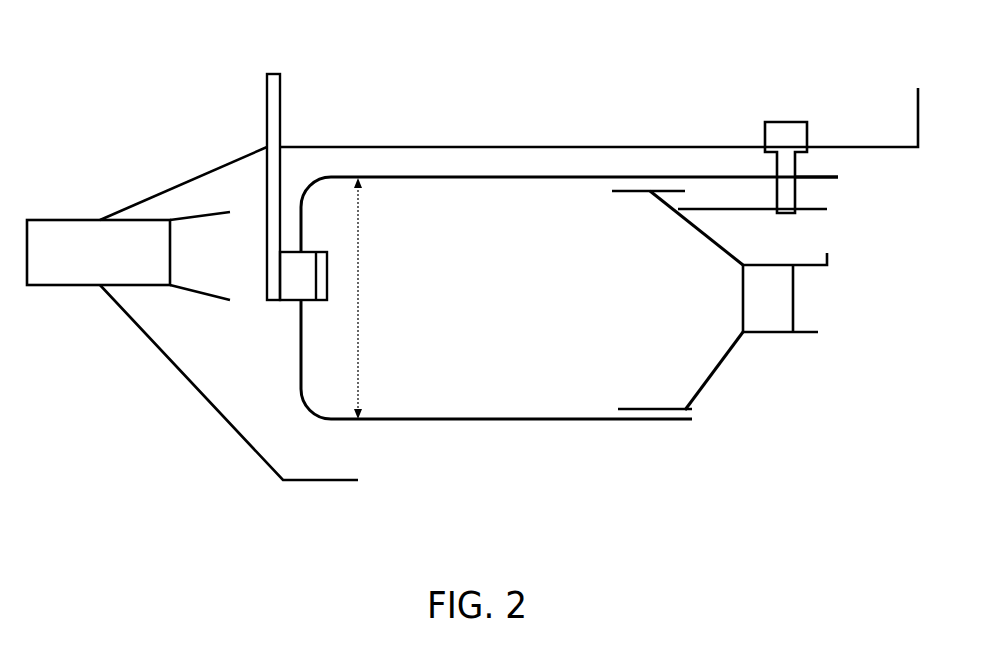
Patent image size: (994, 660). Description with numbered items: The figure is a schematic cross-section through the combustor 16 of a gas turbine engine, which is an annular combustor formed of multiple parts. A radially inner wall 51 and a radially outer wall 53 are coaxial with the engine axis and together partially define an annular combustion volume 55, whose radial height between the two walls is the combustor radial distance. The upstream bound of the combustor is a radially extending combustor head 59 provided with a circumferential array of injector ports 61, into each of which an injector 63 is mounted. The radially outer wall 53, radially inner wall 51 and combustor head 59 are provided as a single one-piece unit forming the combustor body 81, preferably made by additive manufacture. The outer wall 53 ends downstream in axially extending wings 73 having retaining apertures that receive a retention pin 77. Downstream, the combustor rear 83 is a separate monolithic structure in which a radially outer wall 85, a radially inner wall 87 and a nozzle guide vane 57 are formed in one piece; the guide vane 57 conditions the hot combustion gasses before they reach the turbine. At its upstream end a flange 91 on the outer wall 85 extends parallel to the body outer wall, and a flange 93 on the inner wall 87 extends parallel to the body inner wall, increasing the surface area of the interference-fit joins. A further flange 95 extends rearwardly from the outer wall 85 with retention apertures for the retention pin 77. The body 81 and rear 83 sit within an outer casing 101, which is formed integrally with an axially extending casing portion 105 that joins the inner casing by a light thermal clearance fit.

The combustor 16 is at (467, 108).
The radially inner wall 51 is at (527, 420).
The radially outer wall 53 is at (548, 177).
The annular combustion volume 55 is at (557, 316).
The nozzle guide vane 57 is at (795, 290).
The combustor head 59 is at (300, 375).
The injector port 61 is at (293, 302).
The injector 63 is at (265, 187).
The axially extending wing 73 is at (815, 195).
The retention pin 77 is at (790, 120).
The combustor body 81 is at (434, 446).
The combustor rear 83 is at (790, 392).
The radially outer wall of combustor rear 85 is at (712, 243).
The radially inner wall of combustor rear 87 is at (715, 375).
The flange 91 is at (637, 190).
The flange 93 is at (657, 413).
The flange 95 is at (828, 210).
The outer casing 101 is at (360, 147).
The axially extending casing portion 105 is at (260, 458).